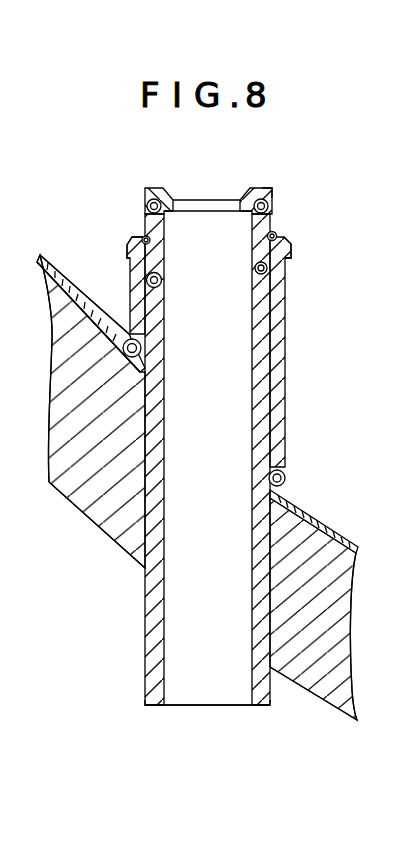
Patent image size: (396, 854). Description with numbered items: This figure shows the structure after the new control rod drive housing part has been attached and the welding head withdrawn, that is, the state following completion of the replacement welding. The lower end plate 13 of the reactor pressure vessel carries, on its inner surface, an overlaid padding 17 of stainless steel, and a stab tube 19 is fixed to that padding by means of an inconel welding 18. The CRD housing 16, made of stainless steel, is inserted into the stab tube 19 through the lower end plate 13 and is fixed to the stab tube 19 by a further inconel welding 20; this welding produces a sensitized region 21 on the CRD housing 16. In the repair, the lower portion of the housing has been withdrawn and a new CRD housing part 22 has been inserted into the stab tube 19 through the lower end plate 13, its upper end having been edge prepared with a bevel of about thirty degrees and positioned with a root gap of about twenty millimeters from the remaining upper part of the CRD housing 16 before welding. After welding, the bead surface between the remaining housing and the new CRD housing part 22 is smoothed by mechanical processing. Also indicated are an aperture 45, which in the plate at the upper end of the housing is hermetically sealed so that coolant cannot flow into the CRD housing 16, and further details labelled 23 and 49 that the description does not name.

The lower end plate 13 is at (337, 702).
The overlaid padding 17 is at (337, 533).
The stab tube 19 is at (286, 347).
The sensitized region 21 is at (287, 266).
The inner tube 23 is at (255, 284).
The inconel welding 18 is at (286, 484).
The aperture 45 is at (208, 205).
The cap corner 49 is at (273, 189).
The CRD housing 16 is at (270, 206).
The inconel welding 20 is at (277, 236).
The new CRD housing part 22 is at (260, 707).